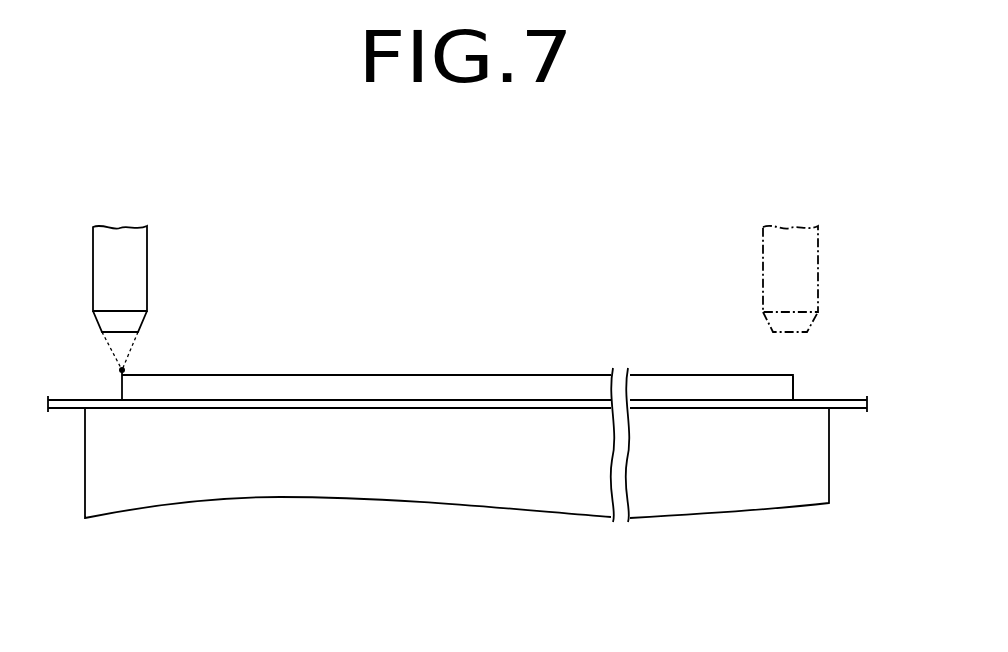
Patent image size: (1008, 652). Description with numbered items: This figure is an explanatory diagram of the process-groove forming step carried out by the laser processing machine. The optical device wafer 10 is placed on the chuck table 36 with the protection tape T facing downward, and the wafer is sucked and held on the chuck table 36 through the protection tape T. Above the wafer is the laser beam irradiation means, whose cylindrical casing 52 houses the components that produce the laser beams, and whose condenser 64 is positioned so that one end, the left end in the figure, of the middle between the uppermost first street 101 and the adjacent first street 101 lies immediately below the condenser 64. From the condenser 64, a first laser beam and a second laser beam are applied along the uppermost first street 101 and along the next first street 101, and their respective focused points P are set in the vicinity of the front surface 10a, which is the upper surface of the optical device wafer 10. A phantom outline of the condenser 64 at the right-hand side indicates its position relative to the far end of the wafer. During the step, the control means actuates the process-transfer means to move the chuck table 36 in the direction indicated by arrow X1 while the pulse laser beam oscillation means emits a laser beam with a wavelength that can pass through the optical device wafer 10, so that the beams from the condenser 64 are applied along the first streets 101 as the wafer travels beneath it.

The condenser 64 is at (121, 227).
The cylindrical casing 52 is at (186, 249).
The focused point P is at (132, 368).
The optical device wafer 10 is at (503, 333).
The front surface 10a is at (370, 375).
The protection tape T is at (60, 400).
The chuck table 36 is at (710, 510).
The first street 101 is at (812, 380).
The process-transfer direction X1 is at (548, 566).